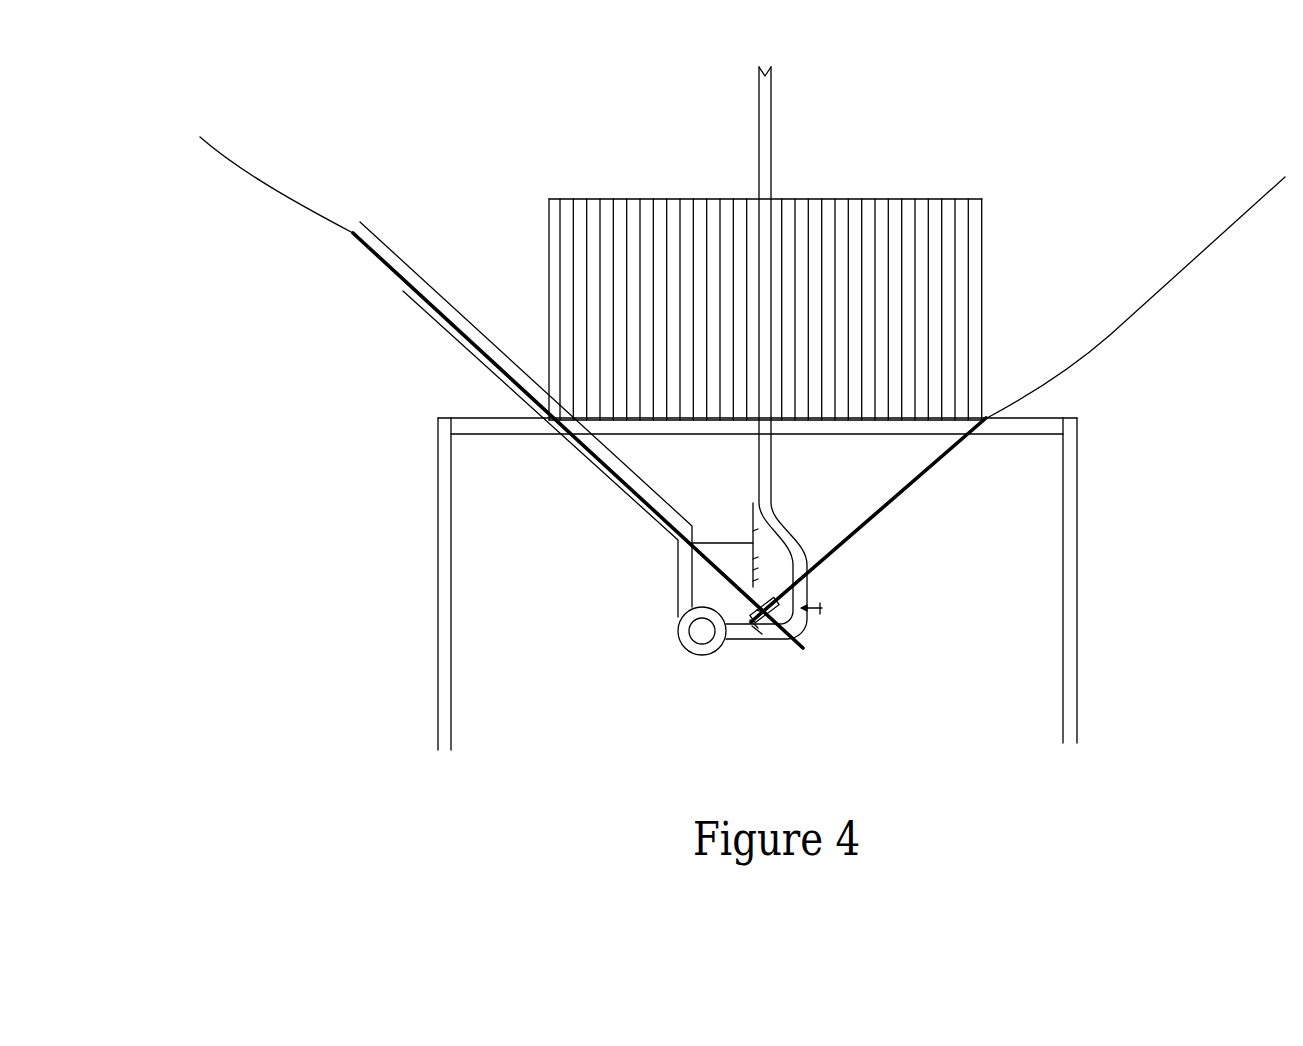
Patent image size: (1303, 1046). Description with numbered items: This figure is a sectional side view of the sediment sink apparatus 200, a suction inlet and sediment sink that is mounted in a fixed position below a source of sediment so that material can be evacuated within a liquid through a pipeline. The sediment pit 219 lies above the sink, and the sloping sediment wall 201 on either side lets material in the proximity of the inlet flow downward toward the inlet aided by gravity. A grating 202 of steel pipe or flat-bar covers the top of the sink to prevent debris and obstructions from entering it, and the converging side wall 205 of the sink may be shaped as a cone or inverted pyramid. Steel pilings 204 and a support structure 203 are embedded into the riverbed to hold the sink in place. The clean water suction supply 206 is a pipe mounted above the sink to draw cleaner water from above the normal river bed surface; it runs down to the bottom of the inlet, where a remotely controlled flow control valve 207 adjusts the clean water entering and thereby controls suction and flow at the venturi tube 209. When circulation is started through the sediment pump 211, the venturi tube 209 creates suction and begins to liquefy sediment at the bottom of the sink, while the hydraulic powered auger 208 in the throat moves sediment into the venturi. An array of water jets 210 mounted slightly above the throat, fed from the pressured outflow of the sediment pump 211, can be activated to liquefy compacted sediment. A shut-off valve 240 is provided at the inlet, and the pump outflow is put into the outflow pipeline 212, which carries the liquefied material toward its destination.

The sediment sink apparatus 200 is at (1003, 153).
The sediment pit 219 is at (1089, 204).
The sediment wall 201 is at (1105, 343).
The grating 202 is at (955, 347).
The support structure 203 is at (1040, 425).
The pilings 204 is at (448, 563).
The side wall 205 is at (900, 495).
The clean water suction supply 206 is at (780, 519).
The flow control valve 207 is at (821, 610).
The auger 208 is at (793, 631).
The venturi tube 209 is at (757, 624).
The water jets 210 is at (753, 531).
The sediment pump 211 is at (698, 636).
The outflow pipeline 212 is at (630, 483).
The shut-off valve 240 is at (759, 616).